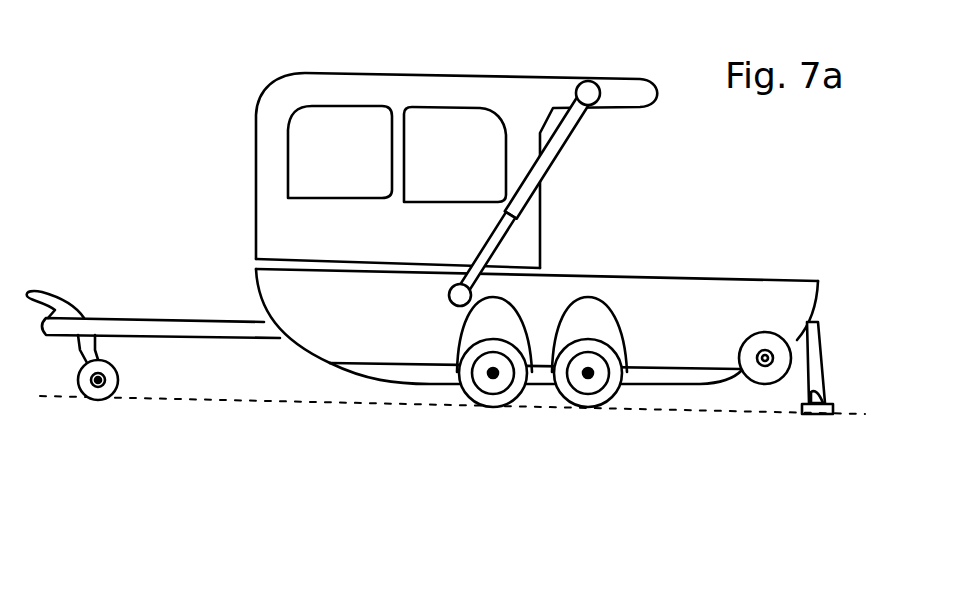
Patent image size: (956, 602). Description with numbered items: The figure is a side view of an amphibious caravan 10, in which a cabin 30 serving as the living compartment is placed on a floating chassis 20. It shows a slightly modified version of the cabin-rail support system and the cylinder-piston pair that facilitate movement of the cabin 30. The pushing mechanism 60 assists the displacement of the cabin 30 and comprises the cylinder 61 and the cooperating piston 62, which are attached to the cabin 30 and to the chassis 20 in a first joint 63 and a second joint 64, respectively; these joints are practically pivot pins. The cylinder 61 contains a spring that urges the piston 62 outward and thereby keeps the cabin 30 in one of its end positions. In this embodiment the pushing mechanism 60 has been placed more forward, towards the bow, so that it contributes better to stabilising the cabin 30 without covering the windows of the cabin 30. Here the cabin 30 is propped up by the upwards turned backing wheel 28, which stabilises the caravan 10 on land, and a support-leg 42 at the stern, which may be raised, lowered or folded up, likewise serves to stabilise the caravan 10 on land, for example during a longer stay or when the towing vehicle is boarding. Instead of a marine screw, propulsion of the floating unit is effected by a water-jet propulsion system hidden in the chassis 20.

The caravan 10 is at (640, 222).
The chassis 20 is at (537, 338).
The backing wheel 28 is at (120, 377).
The cabin 30 is at (456, 170).
The support-leg 42 is at (805, 376).
The pushing mechanism 60 is at (606, 62).
The cylinder 61 is at (536, 172).
The piston 62 is at (504, 229).
The first joint 63 is at (586, 81).
The second joint 64 is at (449, 300).